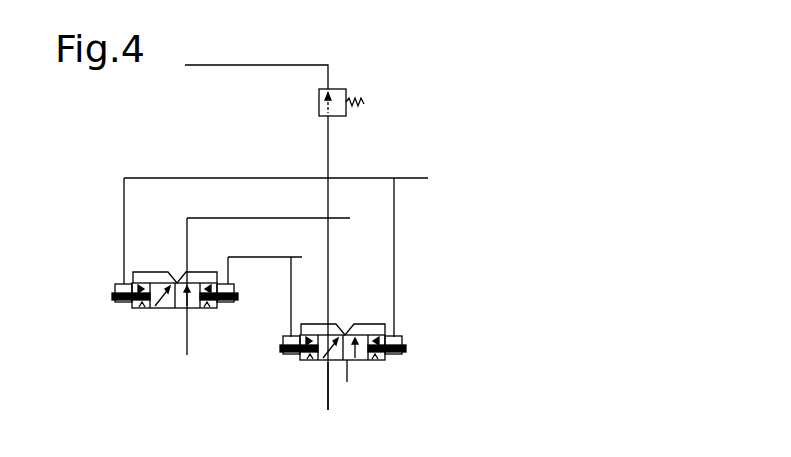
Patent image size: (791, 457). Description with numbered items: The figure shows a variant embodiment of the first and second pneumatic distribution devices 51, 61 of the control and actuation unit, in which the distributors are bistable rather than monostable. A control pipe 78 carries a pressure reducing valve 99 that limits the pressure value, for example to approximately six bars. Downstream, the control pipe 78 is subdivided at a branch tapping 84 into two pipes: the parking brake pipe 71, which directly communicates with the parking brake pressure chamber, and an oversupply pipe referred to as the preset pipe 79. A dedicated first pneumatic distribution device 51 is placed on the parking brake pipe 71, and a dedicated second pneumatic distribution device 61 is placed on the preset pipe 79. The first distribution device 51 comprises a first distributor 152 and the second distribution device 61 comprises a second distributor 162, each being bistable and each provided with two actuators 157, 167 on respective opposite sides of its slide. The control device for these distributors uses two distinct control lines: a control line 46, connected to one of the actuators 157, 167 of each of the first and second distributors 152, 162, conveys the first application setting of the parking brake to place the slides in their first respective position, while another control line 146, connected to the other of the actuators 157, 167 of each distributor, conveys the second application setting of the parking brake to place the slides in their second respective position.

The pressure reducing valve 99 is at (339, 90).
The control pipe 78 is at (328, 160).
The control line 46 is at (170, 178).
The other control line 146 is at (247, 257).
The preset pipe 79 is at (187, 235).
The branch tapping 84 is at (350, 218).
The second pneumatic distribution device 61 is at (139, 310).
The second distributor 162 is at (168, 310).
The actuators 167 is at (108, 318).
The first pneumatic distribution device 51 is at (365, 333).
The actuators 157 is at (280, 345).
The parking brake pipe 71 is at (328, 405).
The first distributor 152 is at (348, 365).